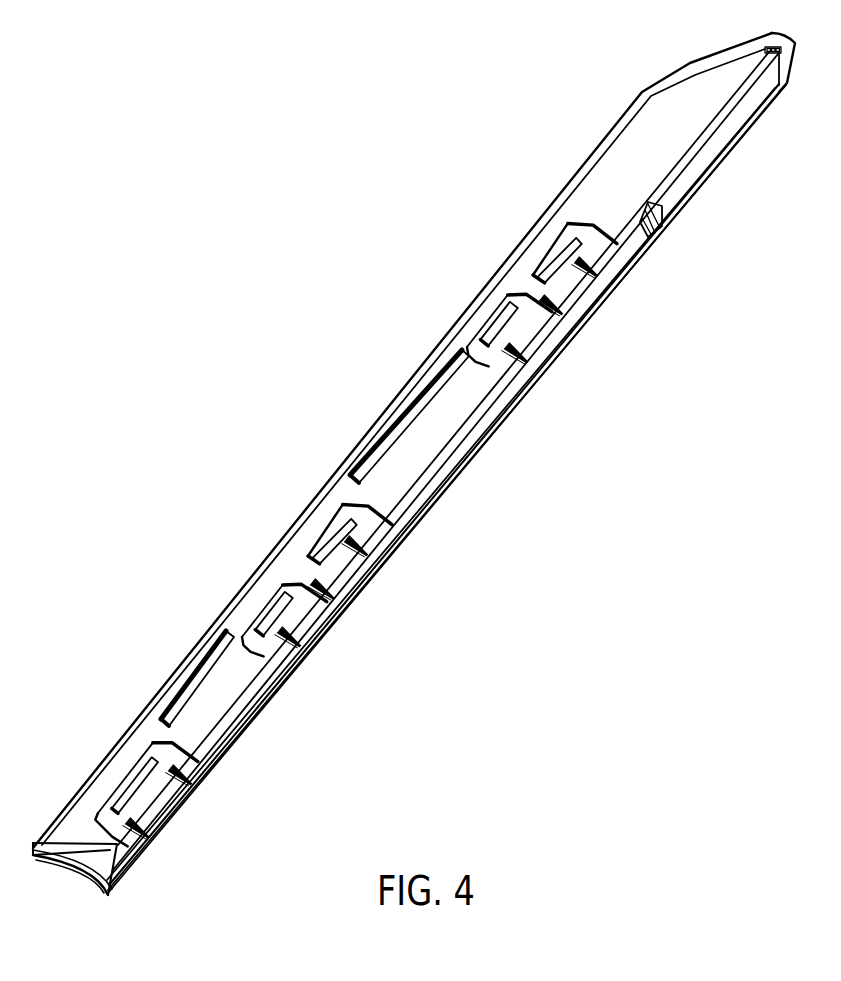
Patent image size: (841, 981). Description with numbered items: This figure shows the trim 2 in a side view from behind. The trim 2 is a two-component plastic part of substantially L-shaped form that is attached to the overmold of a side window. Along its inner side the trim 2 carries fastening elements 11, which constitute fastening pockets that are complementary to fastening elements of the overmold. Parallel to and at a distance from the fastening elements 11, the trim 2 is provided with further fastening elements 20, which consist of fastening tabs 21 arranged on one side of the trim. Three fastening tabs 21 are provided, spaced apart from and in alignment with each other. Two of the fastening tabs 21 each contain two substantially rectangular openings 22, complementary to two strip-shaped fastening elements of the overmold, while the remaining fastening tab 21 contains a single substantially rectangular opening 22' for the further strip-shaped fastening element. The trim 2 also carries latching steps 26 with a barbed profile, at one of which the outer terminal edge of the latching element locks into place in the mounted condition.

The trim 2 is at (263, 306).
The fastening elements 11 is at (405, 410).
The further fastening elements 20 is at (619, 377).
The fastening tabs 21 is at (555, 248).
The openings 22 is at (400, 523).
The opening 22' is at (167, 830).
The latching steps 26 is at (652, 232).